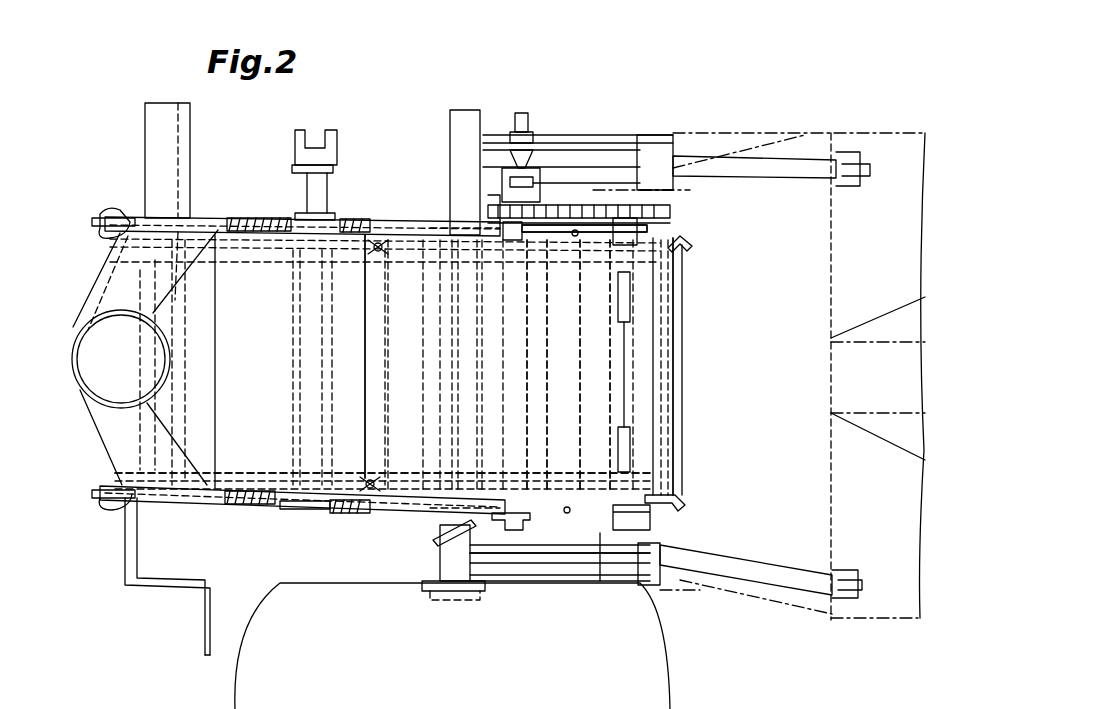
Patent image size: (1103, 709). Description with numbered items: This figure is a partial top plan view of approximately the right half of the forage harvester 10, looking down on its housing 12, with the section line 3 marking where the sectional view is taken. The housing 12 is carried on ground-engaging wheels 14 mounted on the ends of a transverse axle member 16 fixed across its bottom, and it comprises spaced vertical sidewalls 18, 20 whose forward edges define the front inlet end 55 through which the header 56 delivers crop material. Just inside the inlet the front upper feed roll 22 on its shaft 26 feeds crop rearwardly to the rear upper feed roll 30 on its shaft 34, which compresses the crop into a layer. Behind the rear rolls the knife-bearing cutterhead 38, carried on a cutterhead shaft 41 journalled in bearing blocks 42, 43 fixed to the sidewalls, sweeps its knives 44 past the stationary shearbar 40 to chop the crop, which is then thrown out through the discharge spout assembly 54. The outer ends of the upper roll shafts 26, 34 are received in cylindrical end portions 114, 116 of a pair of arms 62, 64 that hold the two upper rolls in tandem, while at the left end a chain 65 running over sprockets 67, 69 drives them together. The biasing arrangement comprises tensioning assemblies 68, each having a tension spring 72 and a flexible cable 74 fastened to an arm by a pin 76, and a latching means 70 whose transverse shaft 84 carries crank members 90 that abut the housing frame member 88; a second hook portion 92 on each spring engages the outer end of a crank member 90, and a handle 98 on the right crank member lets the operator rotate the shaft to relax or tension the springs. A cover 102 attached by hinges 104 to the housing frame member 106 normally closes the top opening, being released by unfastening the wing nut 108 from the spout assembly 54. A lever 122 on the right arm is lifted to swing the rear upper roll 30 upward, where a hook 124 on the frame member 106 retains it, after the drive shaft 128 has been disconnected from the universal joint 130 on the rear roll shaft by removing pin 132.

The section line 3- 3 is at (355, 184).
The forage harvester 10 is at (604, 71).
The housing 12 is at (404, 211).
The ground-engaging wheels 14 is at (668, 664).
The axle member 16 is at (440, 572).
The vertical sidewall 18 is at (567, 474).
The vertical sidewall 20 is at (575, 238).
The front upper feed roll 22 is at (660, 493).
The front upper feed roll shaft 26 is at (615, 378).
The rear upper feed roll 30 is at (578, 450).
The rear upper feed roll shaft 34 is at (530, 366).
The cutterhead 38 is at (276, 462).
The shearbar 40 is at (460, 308).
The cutterhead shaft 41 is at (297, 300).
The bearing block 42 is at (335, 513).
The bearing block 43 is at (300, 213).
The knives 44 is at (422, 347).
The discharge spout assembly 54 is at (90, 294).
The front inlet end 55 is at (684, 368).
The header 56 is at (870, 118).
The arm 62 is at (590, 545).
The arm 64 is at (665, 252).
The chain 65 is at (577, 204).
The sprocket 67 is at (610, 200).
The tensioning assembly 68 is at (356, 208).
The sprocket 69 is at (497, 197).
The latching means 70 is at (106, 529).
The tension spring 72 is at (248, 220).
The flexible cable 74 is at (447, 230).
The pin 76 is at (575, 236).
The shaft 84 is at (182, 305).
The housing frame member 88 is at (140, 305).
The crank member 90 is at (92, 222).
The second hook portion 92 is at (100, 216).
The handle 98 is at (150, 580).
The cover 102 is at (370, 300).
The hinges 104 is at (618, 308).
The housing frame member 106 is at (674, 308).
The wing nut 108 is at (380, 252).
The cylindrical end portion 114 is at (688, 233).
The cylindrical end portion 116 is at (505, 232).
The lever 122 is at (450, 542).
The hook 124 is at (650, 517).
The drive shaft 128 is at (529, 118).
The universal joint 130 is at (534, 162).
The pin 132 is at (518, 118).